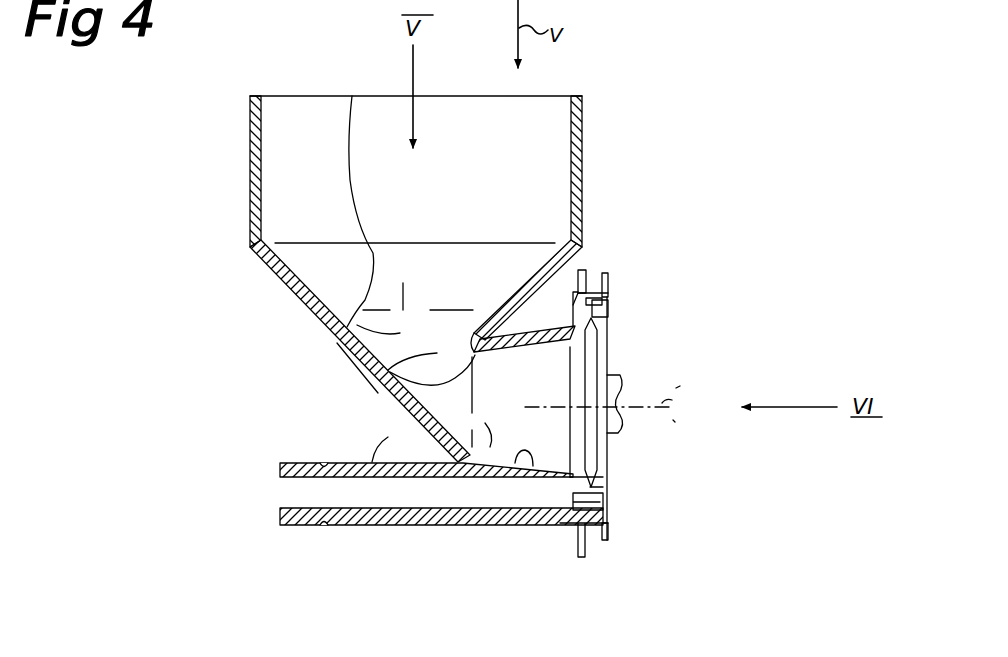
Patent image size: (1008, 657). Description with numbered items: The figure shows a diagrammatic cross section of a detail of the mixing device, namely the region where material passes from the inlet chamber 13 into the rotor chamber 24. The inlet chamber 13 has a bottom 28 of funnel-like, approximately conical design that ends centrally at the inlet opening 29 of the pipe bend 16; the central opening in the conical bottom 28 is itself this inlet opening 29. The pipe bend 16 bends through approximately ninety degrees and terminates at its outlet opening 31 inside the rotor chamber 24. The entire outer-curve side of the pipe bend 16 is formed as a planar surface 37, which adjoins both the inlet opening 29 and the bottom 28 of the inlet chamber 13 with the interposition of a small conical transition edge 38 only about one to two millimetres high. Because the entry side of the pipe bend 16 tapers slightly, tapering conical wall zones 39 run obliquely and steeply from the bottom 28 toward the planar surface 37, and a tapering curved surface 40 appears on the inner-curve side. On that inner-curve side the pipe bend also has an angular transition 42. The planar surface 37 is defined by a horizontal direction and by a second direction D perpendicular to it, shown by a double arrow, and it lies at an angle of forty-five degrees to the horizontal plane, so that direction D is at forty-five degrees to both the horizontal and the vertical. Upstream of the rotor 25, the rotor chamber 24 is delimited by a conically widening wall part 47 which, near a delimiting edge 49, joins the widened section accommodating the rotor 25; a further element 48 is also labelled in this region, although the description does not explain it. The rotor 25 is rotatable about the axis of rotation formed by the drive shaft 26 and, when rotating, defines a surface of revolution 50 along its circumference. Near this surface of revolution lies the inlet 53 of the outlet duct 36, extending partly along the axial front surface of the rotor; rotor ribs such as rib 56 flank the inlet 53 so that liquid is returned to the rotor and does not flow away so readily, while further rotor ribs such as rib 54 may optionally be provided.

The inlet chamber 13 is at (318, 200).
The conical transition edge 38 is at (352, 96).
The inlet opening 29 is at (397, 270).
The planar surface 37 is at (390, 363).
The tapering curved surface 40 is at (470, 327).
The bottom 28 is at (289, 290).
The conical wall zones 39 is at (357, 327).
The pipe bend 16 is at (385, 391).
The angular transition 42 is at (412, 400).
The rotor chamber 24 is at (535, 373).
The rotor rib 54 is at (603, 305).
The flange 48 is at (603, 337).
The drive shaft 26 is at (700, 387).
The rotor 25 is at (593, 460).
The delimiting edge 49 is at (605, 473).
The surface of revolution 50 is at (604, 500).
The rotor rib 56 is at (620, 515).
The outlet duct 36 is at (437, 490).
The outlet opening 31 is at (497, 475).
The conically widening wall part 47 is at (523, 475).
The inlet 53 is at (553, 508).
The second direction D is at (353, 378).